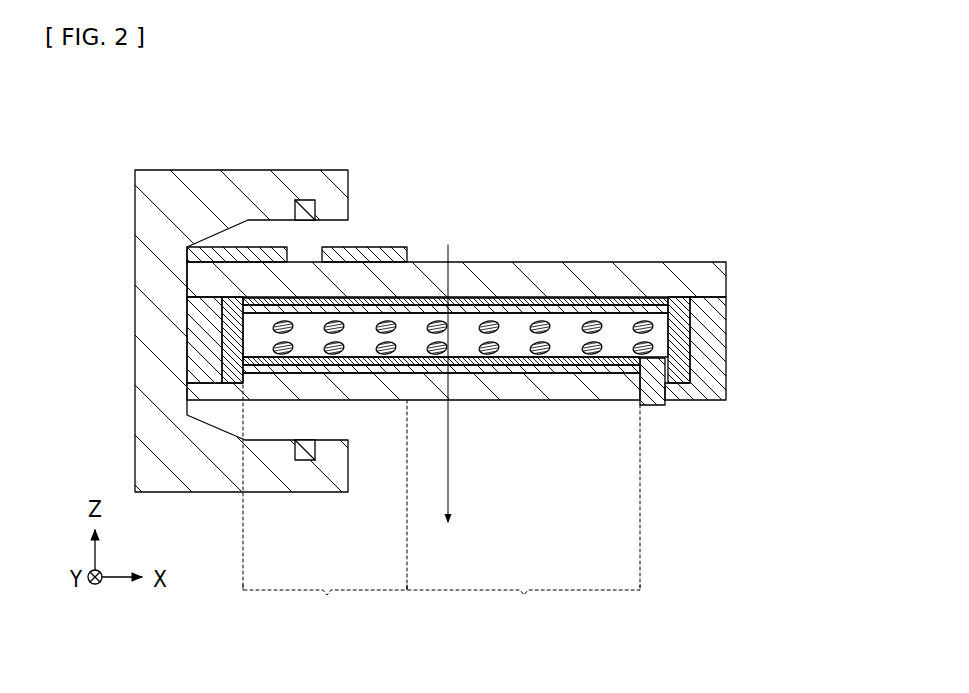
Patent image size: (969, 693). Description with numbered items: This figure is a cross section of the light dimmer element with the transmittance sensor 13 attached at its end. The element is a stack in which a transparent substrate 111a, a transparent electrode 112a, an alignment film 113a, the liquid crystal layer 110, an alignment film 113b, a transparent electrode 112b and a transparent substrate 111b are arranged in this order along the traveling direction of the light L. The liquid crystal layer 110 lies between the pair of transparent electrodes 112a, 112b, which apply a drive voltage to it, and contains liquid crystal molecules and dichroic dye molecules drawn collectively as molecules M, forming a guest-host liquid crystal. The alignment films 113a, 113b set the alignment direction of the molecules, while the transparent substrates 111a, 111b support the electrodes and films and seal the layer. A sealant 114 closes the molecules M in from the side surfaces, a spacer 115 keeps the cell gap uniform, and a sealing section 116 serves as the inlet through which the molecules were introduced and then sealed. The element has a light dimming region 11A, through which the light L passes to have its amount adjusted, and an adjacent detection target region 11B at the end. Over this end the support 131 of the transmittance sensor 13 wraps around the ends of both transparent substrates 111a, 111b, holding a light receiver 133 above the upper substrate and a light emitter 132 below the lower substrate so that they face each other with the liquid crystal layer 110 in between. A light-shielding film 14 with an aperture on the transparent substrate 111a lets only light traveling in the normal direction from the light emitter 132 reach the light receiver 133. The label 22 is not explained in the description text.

The transmittance sensor 13 is at (360, 110).
The support 131 is at (203, 178).
The light emitter 132 is at (305, 461).
The light receiver 133 is at (307, 199).
The light-shielding film 14 is at (398, 247).
The transparent substrate 111a is at (556, 285).
The transparent substrate 111b is at (611, 390).
The transparent electrode 112a is at (493, 310).
The transparent electrode 112b is at (548, 362).
The alignment film 113a is at (458, 300).
The alignment film 113b is at (483, 368).
The liquid crystal layer 110 is at (628, 327).
The molecules M is at (594, 321).
The sealant 114 is at (212, 368).
The spacer 115 is at (234, 386).
The sealing section 116 is at (657, 407).
The light L is at (446, 244).
The light control device 22 is at (715, 538).
The light dimming region 11A is at (523, 516).
The detection target region 11B is at (325, 506).